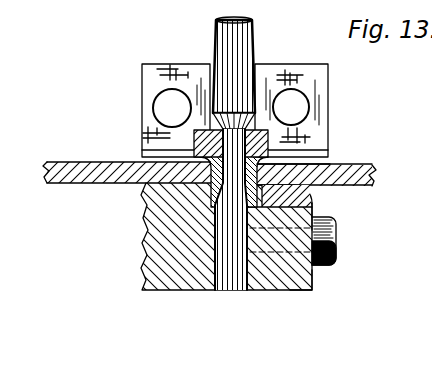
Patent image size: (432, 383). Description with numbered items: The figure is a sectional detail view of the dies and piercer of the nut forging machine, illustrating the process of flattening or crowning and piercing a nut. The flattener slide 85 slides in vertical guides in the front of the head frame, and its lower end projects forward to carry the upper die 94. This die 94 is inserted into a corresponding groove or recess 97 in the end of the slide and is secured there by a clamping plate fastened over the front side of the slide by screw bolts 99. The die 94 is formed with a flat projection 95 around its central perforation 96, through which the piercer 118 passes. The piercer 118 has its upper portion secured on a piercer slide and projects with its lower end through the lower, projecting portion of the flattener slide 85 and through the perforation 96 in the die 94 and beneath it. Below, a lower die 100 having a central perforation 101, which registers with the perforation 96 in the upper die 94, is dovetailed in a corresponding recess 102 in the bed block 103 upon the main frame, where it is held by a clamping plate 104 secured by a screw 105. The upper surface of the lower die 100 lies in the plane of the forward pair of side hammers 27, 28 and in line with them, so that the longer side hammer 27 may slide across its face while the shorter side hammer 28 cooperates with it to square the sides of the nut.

The piercer 118 is at (242, 48).
The screw bolts 99 is at (168, 106).
The flattener slide 85 is at (328, 118).
The groove or recess 97 is at (270, 132).
The die 94 is at (272, 151).
The flat projection 95 is at (322, 163).
The central perforation 96 is at (142, 150).
The side hammer 27 is at (98, 170).
The side hammer 28 is at (374, 173).
The recess 102 is at (198, 197).
The bed block 103 is at (158, 248).
The die 100 is at (306, 192).
The central perforation 101 is at (313, 209).
The screw 105 is at (337, 238).
The clamping plate 104 is at (313, 279).